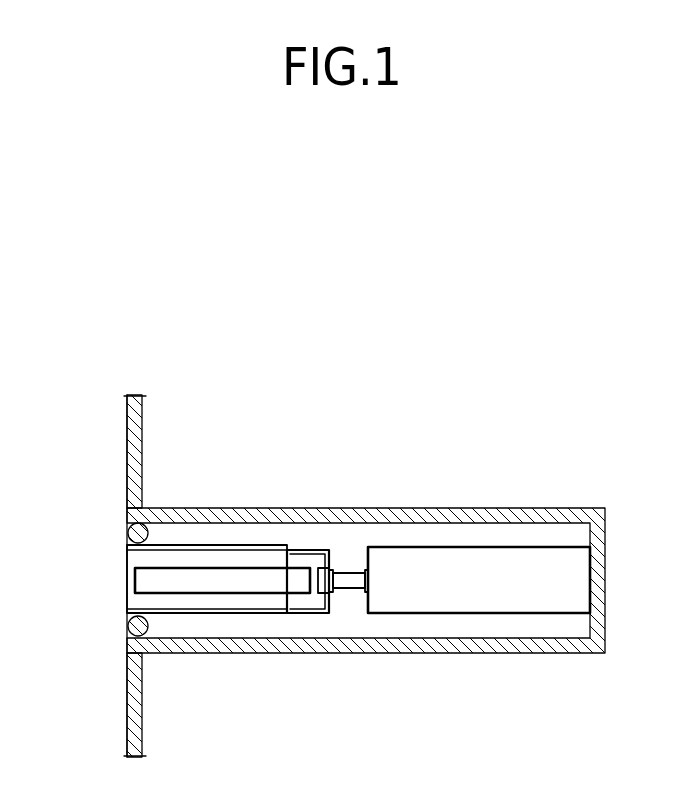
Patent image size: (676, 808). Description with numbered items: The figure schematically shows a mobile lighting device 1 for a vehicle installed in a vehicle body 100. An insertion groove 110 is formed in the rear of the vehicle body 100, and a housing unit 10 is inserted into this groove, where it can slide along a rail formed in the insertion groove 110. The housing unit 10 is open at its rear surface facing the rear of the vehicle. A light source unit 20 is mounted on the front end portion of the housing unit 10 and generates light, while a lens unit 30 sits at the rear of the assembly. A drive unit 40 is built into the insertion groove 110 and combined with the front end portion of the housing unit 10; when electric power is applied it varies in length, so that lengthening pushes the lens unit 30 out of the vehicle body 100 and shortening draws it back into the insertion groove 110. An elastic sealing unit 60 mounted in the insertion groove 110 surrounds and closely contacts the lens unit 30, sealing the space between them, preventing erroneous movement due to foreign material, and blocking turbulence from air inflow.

The mobile lighting device for a vehicle 1 is at (598, 238).
The vehicle body 100 is at (140, 443).
The insertion groove 110 is at (292, 532).
The sealing unit 60 is at (127, 624).
The lens unit 30 is at (230, 613).
The housing unit 10 is at (305, 613).
The light source unit 20 is at (332, 556).
The drive unit 40 is at (476, 603).